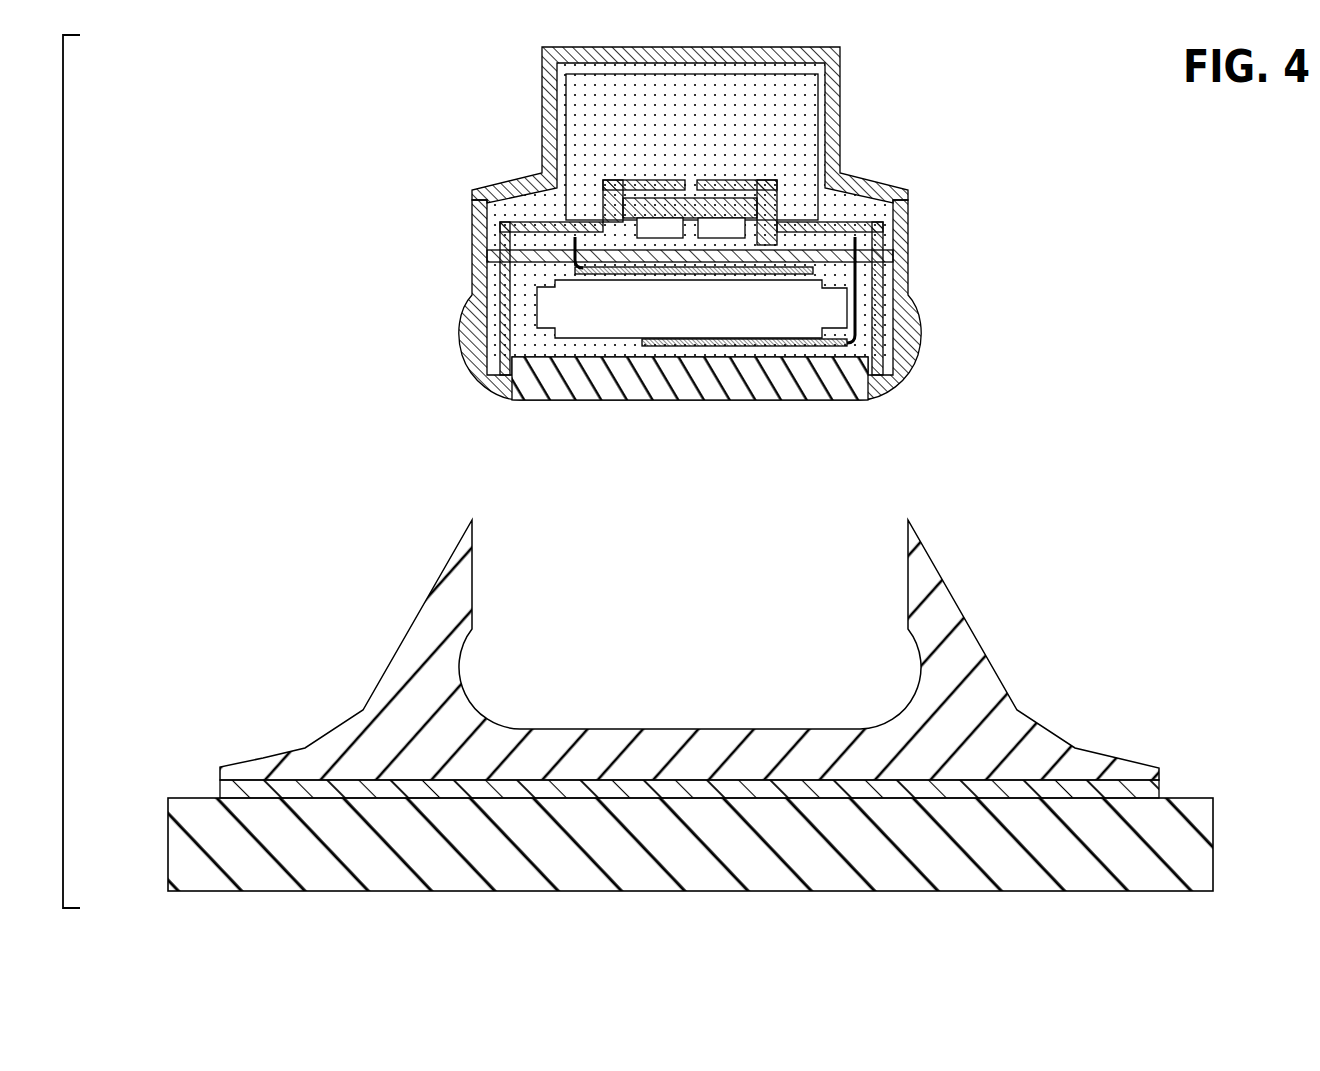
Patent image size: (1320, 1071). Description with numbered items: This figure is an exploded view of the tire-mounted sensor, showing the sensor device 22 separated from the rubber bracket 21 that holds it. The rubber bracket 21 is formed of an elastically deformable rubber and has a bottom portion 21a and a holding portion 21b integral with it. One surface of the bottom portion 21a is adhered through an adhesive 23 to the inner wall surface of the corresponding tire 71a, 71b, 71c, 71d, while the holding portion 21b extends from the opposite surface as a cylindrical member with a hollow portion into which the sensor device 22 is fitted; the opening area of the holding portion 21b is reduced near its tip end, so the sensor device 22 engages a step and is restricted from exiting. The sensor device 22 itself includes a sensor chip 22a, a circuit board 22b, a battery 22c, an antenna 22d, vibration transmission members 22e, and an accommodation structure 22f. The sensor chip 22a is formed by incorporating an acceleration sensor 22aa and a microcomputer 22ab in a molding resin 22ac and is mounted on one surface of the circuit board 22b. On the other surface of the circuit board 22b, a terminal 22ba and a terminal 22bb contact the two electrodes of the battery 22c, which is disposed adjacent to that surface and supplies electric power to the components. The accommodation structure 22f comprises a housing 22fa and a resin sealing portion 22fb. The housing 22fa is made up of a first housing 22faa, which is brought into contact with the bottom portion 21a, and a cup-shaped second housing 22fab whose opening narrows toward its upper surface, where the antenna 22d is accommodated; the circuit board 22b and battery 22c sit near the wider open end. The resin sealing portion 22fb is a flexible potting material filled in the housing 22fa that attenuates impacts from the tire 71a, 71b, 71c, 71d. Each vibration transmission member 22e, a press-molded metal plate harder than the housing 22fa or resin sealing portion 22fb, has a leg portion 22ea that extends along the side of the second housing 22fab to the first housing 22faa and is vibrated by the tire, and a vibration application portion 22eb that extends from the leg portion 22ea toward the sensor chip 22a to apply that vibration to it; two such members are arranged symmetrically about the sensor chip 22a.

The sensor device 22 is at (508, 91).
The sensor chip 22a is at (936, 58).
The acceleration sensor 22aa is at (660, 217).
The microcomputer 22ab is at (712, 217).
The molding resin 22ac is at (740, 203).
The antenna 22d is at (825, 150).
The vibration transmission member 22e is at (351, 110).
The leg portion 22ea is at (503, 243).
The vibration application portion 22eb is at (615, 182).
The circuit board 22b is at (895, 252).
The terminal 22ba is at (578, 270).
The terminal 22bb is at (848, 345).
The battery 22c is at (692, 322).
The accommodation structure 22f is at (1171, 235).
The resin sealing portion 22fb is at (897, 285).
The housing 22fa is at (1086, 278).
The second housing 22fab is at (885, 300).
The first housing 22faa is at (908, 352).
The rubber bracket 21 is at (359, 650).
The bottom portion 21a is at (1048, 750).
The holding portion 21b is at (946, 628).
The adhesive 23 is at (1144, 792).
The tire 71a is at (705, 874).
The tire 71b is at (705, 874).
The tire 71c is at (705, 874).
The tire 71d is at (1030, 877).